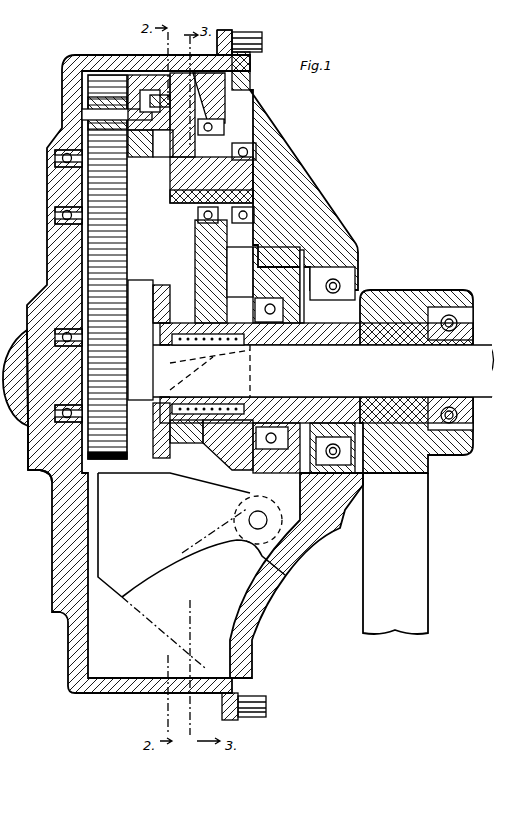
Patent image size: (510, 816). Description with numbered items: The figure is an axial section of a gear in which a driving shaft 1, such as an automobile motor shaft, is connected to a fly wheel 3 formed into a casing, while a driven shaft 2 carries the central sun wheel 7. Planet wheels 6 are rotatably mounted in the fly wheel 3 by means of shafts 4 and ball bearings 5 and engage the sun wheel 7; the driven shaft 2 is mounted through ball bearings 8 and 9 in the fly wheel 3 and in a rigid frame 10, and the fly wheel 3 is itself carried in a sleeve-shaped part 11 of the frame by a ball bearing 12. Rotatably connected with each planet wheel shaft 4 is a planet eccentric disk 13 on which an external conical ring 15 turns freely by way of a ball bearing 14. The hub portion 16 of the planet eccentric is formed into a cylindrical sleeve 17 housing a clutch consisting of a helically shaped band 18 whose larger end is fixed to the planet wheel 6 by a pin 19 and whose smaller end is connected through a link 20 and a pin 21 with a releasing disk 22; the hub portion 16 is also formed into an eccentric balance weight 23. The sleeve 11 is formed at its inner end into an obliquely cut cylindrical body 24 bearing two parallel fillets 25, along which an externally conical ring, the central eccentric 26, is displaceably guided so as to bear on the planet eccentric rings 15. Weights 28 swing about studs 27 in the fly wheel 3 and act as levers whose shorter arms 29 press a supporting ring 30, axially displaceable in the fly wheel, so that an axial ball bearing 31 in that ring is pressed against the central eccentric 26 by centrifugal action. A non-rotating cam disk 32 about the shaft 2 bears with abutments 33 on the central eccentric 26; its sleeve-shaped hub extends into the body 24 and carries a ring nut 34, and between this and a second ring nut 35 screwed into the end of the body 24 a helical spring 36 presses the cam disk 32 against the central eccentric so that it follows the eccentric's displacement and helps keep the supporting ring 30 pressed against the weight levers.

The driving shaft 1 is at (14, 432).
The driven shaft 2 is at (480, 400).
The fly wheel 3 is at (62, 70).
The shaft 4 is at (252, 176).
The ball bearing 5 is at (55, 160).
The planet wheel 6 is at (95, 248).
The sun wheel 7 is at (50, 480).
The ball bearing 8 is at (30, 470).
The ball bearing 9 is at (462, 318).
The rigid frame 10 is at (400, 292).
The sleeve-shaped part 11 is at (428, 465).
The ball bearing 12 is at (354, 277).
The eccentric disk 13 is at (224, 133).
The ball bearing 14 is at (214, 121).
The external conical ring 15 is at (212, 90).
The hub portion 16 is at (182, 158).
The cylindrical sleeve 17 is at (134, 94).
The helically shaped band 18 is at (147, 95).
The pin 19 is at (95, 116).
The link 20 is at (162, 157).
The pin 21 is at (143, 157).
The releasing disk 22 is at (165, 95).
The balance weight 23 is at (270, 222).
The cylindrical body 24 is at (187, 437).
The fillet 25 is at (213, 370).
The central eccentric 26 is at (262, 243).
The stud 27 is at (262, 527).
The weight 28 is at (112, 600).
The shorter arm 29 is at (292, 533).
The supporting ring 30 is at (312, 527).
The axial ball bearing 31 is at (246, 446).
The cam disk 32 is at (155, 432).
The abutment 33 is at (162, 305).
The ring nut 34 is at (256, 340).
The ring nut 35 is at (162, 331).
The helical spring 36 is at (170, 352).